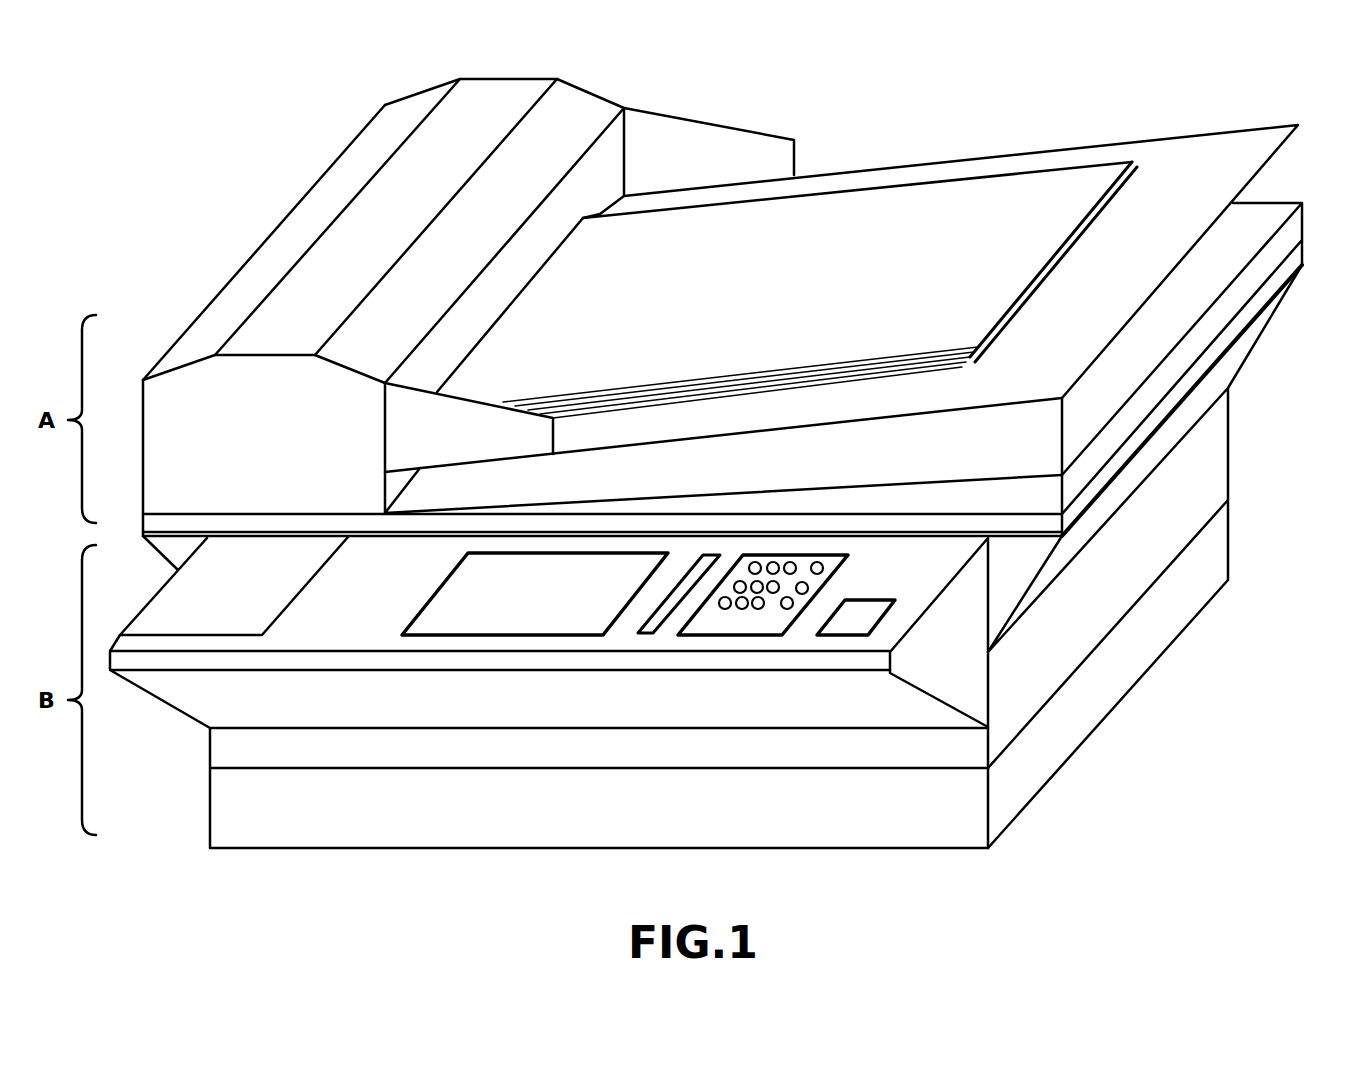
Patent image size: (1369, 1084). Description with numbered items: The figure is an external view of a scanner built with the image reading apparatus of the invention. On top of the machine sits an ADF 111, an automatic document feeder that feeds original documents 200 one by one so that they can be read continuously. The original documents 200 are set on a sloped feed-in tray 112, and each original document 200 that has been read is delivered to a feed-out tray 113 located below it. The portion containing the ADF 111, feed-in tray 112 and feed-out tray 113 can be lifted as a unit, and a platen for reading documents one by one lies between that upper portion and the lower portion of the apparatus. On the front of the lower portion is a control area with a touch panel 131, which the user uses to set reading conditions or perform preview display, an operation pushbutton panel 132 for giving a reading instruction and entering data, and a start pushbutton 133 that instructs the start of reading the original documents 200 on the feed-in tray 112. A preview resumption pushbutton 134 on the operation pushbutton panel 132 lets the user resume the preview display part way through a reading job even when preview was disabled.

The ADF (Auto Document Feeder) 111 is at (318, 197).
The feed-in tray 112 is at (1240, 143).
The feed-out tray 113 is at (1283, 213).
The original documents 200 is at (855, 215).
The touch panel 131 is at (433, 596).
The operation pushbutton panel 132 is at (730, 637).
The start pushbutton 133 is at (832, 636).
The preview resumption pushbutton 134 is at (824, 566).